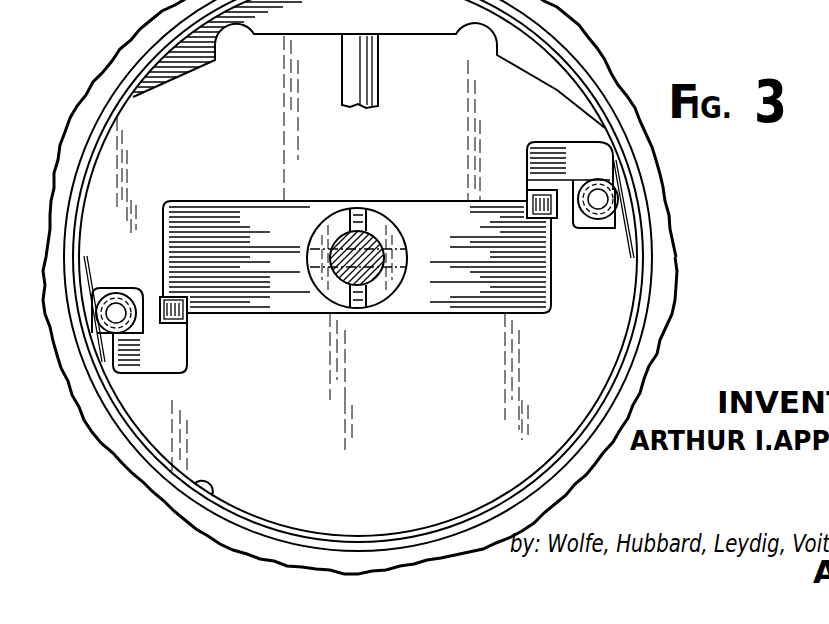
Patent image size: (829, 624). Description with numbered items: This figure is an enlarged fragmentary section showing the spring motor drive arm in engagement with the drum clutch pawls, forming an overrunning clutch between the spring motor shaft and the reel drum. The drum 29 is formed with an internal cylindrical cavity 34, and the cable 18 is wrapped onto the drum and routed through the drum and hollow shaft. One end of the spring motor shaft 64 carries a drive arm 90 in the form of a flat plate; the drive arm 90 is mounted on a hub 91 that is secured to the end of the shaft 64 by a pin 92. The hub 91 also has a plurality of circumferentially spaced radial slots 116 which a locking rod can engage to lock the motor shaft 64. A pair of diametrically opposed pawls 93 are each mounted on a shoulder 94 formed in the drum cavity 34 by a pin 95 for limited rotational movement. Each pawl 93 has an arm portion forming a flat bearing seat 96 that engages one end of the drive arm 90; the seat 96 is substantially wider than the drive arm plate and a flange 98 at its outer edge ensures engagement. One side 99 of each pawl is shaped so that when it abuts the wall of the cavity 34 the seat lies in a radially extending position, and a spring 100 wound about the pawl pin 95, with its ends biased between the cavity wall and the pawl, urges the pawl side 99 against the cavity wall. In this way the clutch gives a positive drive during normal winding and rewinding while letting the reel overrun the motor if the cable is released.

The cable 18 is at (380, 78).
The brake drum 29 is at (660, 304).
The internal cylindrical cavity 34 is at (200, 500).
The spring motor shaft 64 is at (338, 275).
The drive arm 90 is at (213, 200).
The hub 91 is at (330, 207).
The pin 92 is at (399, 249).
The pawl 93 is at (543, 141).
The shoulder 94 is at (578, 229).
The pin 95 is at (110, 320).
The bearing seat 96 is at (523, 207).
The flange 98 is at (533, 218).
The pawl side 99 is at (618, 160).
The spring 100 is at (568, 179).
The radial slot 116 is at (360, 205).